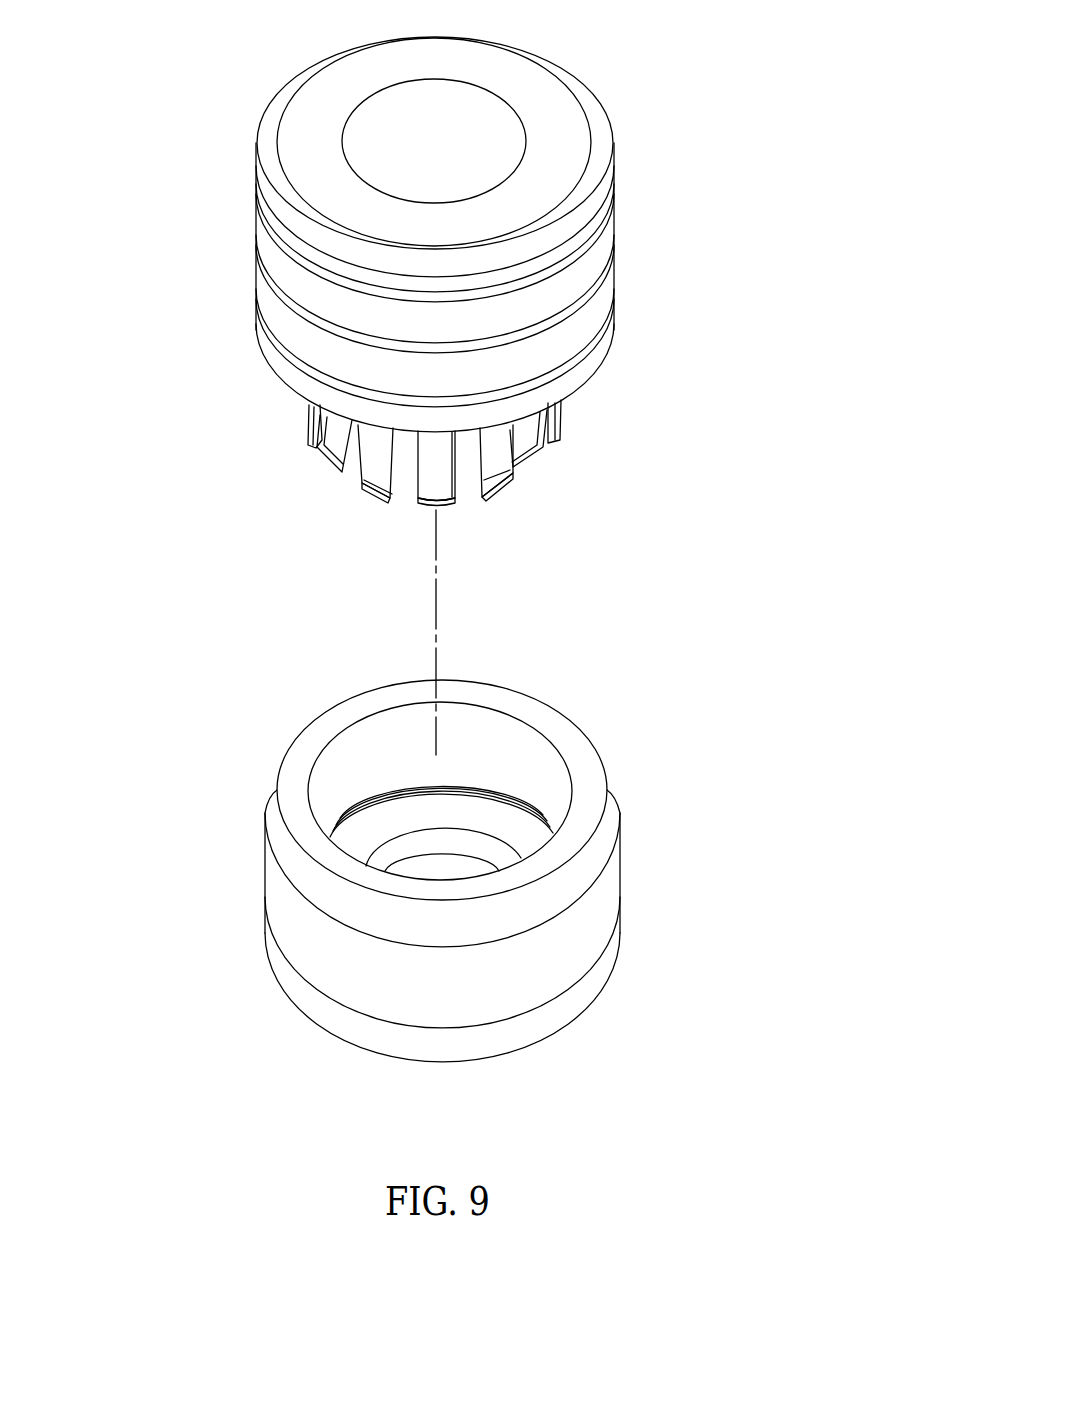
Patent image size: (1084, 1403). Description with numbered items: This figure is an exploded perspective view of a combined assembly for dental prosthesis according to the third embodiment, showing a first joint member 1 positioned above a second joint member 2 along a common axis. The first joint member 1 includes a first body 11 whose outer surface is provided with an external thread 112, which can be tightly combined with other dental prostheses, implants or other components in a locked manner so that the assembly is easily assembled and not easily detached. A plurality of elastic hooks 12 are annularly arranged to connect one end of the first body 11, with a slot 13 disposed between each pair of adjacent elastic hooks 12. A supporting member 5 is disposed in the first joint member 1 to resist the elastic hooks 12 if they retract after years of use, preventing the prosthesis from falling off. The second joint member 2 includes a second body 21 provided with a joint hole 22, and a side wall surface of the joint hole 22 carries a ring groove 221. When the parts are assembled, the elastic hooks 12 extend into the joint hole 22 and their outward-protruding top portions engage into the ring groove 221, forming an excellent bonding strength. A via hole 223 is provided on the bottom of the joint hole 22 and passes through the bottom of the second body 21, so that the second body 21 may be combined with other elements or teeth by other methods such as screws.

The first joint member 1 is at (640, 87).
The supporting member 5 is at (480, 113).
The first body 11 is at (205, 105).
The external thread 112 is at (603, 280).
The elastic hooks 12 is at (497, 477).
The slot 13 is at (518, 470).
The second joint member 2 is at (675, 722).
The second body 21 is at (232, 762).
The joint hole 22 is at (507, 737).
The ring groove 221 is at (371, 800).
The via hole 223 is at (467, 847).